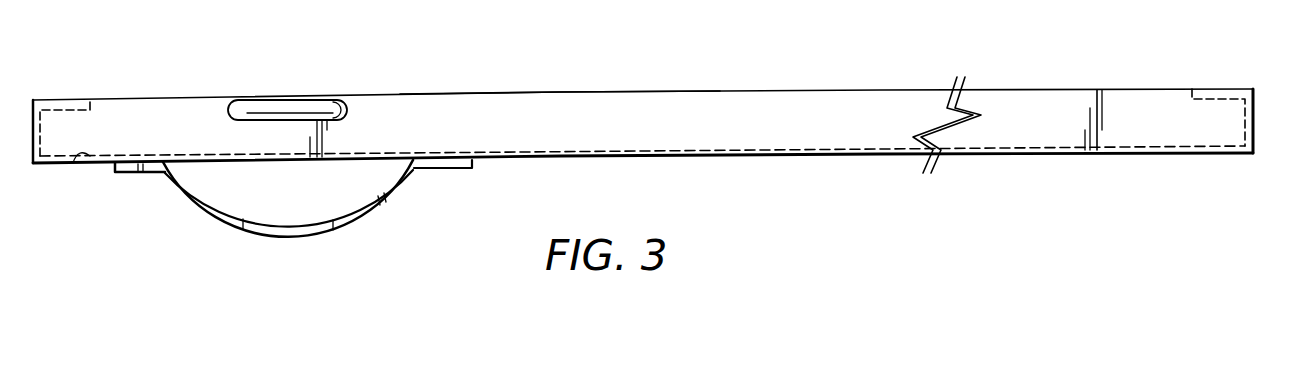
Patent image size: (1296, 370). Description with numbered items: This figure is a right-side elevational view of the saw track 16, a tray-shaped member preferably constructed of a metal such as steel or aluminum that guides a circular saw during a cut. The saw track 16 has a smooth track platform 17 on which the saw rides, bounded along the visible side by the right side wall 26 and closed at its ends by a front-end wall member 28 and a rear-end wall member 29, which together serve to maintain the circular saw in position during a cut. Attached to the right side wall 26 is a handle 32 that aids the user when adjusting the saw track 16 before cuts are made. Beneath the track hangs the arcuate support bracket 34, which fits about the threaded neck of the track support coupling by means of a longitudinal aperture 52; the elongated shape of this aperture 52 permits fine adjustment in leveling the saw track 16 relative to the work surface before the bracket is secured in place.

The saw track 16 is at (587, 74).
The track platform 17 is at (74, 161).
The right side wall 26 is at (700, 101).
The front-end wall member 28 is at (53, 100).
The rear-end wall member 29 is at (1227, 89).
The handle 32 is at (303, 103).
The arcuate support bracket 34 is at (197, 193).
The longitudinal aperture 52 is at (317, 230).